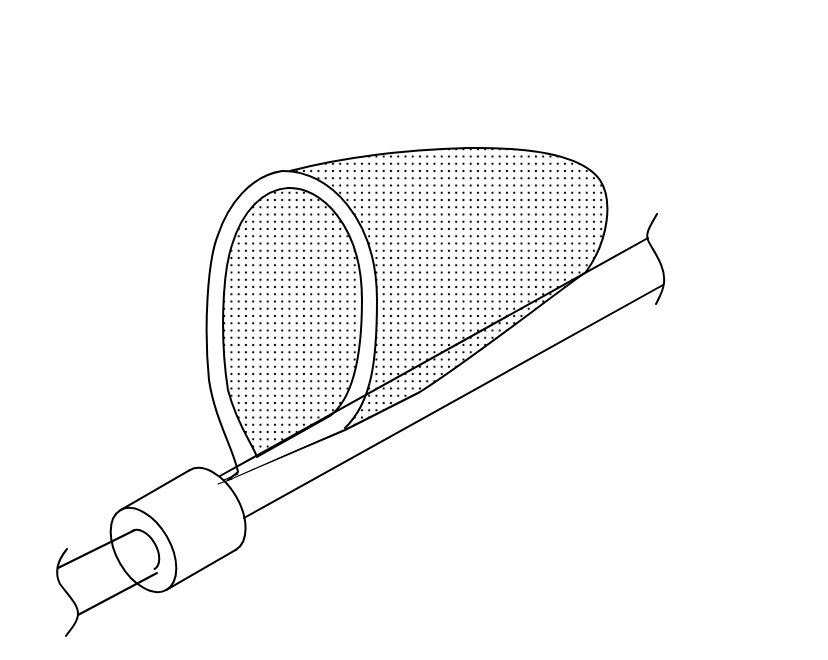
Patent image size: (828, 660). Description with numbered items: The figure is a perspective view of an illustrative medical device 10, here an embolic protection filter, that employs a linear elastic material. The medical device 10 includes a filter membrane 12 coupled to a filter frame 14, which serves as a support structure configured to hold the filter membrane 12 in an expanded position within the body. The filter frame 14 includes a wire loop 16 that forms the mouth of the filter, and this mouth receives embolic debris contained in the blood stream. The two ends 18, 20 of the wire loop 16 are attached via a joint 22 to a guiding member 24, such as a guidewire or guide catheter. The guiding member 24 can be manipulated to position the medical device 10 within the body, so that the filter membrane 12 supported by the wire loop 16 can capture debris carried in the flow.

The medical device 10 is at (444, 131).
The filter membrane 12 is at (568, 183).
The filter frame 14 is at (184, 293).
The wire loop 16 is at (210, 363).
The end of the wire loop 18 is at (225, 472).
The end of the wire loop 20 is at (250, 480).
The joint 22 is at (200, 548).
The guiding member 24 is at (595, 302).